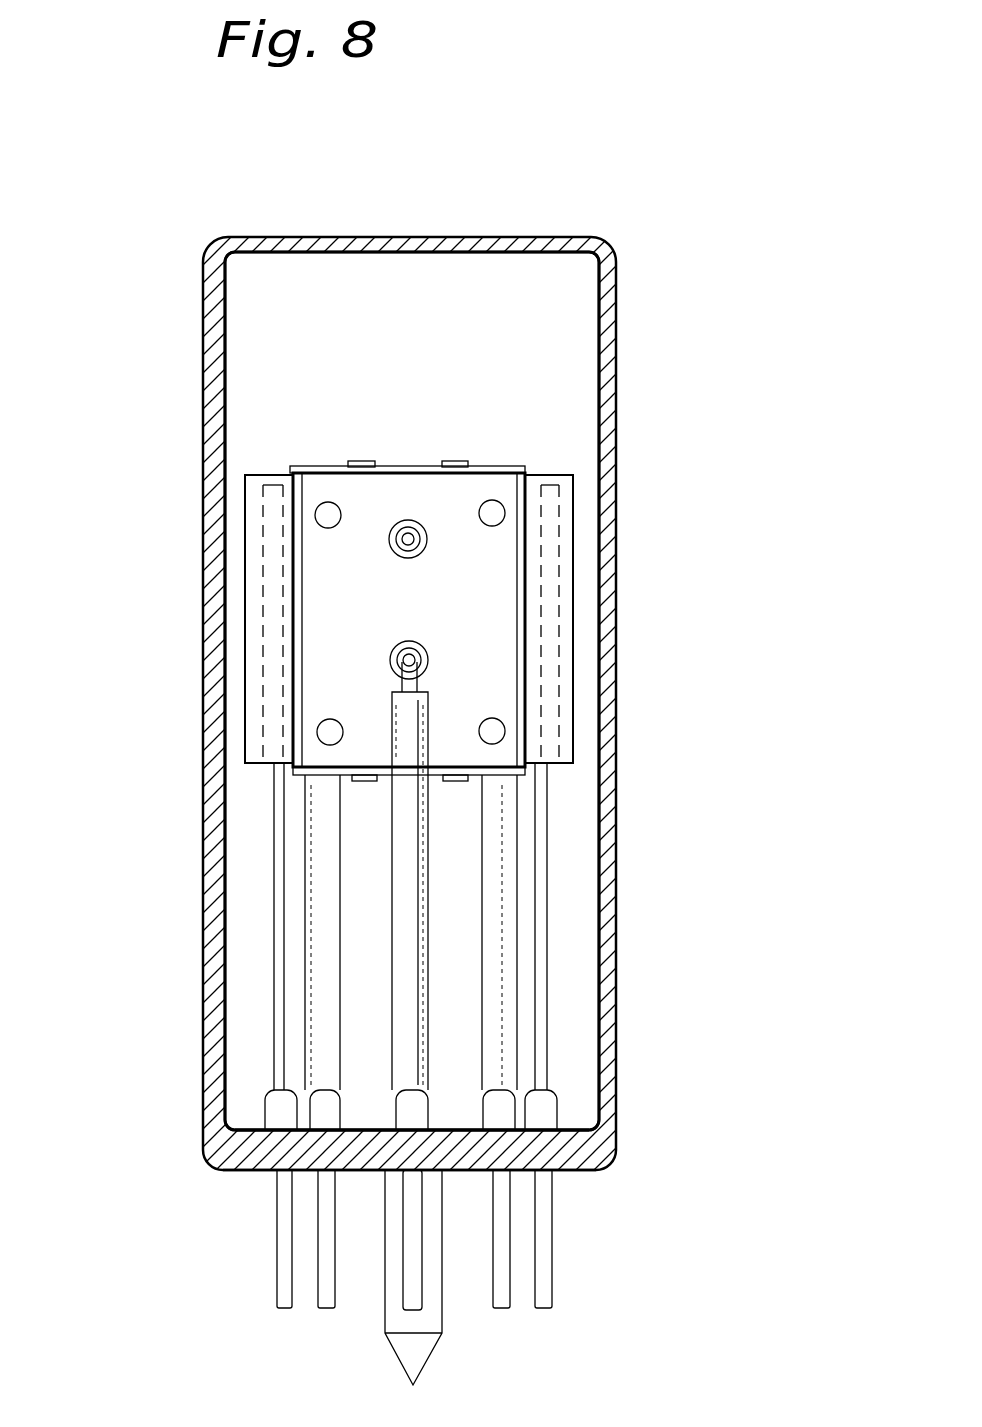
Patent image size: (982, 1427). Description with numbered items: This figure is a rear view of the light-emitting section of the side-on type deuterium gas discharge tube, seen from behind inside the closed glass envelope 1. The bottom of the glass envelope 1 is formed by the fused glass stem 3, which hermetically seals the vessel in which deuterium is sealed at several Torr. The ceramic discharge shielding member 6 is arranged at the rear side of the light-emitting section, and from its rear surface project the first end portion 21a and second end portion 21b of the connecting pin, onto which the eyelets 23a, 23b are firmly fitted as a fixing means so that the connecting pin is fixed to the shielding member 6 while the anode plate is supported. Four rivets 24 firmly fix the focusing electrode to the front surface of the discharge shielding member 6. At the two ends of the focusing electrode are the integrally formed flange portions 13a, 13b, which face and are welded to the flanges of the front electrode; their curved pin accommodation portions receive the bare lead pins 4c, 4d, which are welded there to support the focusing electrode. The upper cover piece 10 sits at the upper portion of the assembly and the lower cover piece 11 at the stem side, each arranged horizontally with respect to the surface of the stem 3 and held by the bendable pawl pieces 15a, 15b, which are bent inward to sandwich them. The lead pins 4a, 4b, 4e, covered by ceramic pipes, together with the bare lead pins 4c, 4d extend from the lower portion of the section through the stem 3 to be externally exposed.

The glass envelope 1 is at (616, 340).
The glass stem 3 is at (585, 1148).
The lead pin 4a is at (540, 1000).
The lead pin 4b is at (323, 1008).
The bare lead pin 4c is at (498, 932).
The bare lead pin 4d is at (280, 960).
The lead pin 4e is at (405, 868).
The discharge shielding member 6 is at (335, 587).
The upper cover piece 10 is at (322, 467).
The lower cover piece 11 is at (473, 771).
The flange portion 13a is at (566, 500).
The flange portion 13b is at (250, 508).
The pawl piece 15a is at (457, 461).
The pawl piece 15b is at (456, 781).
The first end portion 21a is at (427, 550).
The second end portion 21b is at (425, 656).
The eyelet 23a is at (425, 525).
The eyelet 23b is at (425, 672).
The rivets 24 is at (326, 503).